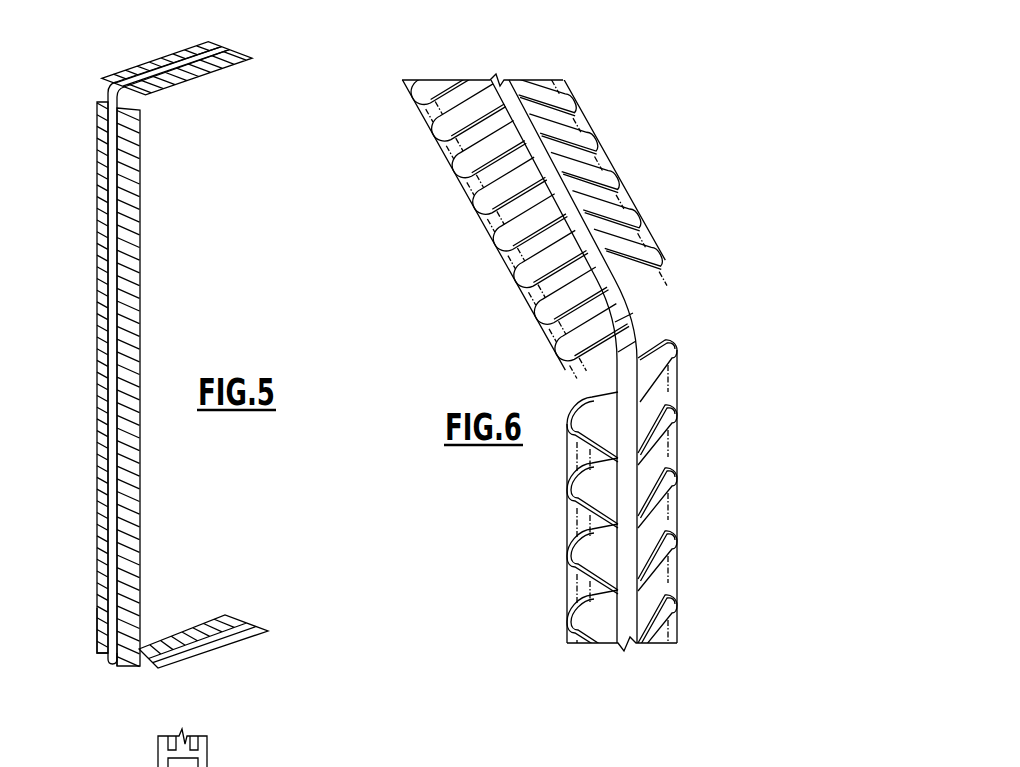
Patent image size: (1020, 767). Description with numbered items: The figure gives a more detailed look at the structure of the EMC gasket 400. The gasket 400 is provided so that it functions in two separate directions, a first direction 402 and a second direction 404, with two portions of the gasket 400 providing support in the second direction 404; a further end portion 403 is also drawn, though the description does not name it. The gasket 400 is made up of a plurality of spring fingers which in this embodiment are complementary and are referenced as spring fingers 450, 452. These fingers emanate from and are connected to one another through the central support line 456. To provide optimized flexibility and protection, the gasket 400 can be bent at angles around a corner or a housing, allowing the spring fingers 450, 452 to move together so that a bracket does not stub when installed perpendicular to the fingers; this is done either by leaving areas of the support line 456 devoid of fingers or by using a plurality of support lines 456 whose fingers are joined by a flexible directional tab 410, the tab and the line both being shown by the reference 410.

In FIG. 5, the gasket 400 is at (100, 365).
In FIG. 5, the first direction 402 is at (102, 188).
In FIG. 5, the lower fin plate 403 is at (186, 637).
In FIG. 5, the second direction 404 is at (183, 53).
In FIG. 5, the flexible directional tab 410 is at (107, 95).
In FIG. 6, the flexible directional tab 410 is at (628, 321).
In FIG. 5, the spring fingers 450 is at (138, 150).
In FIG. 5, the spring fingers 452 is at (98, 649).
In FIG. 5, the central support line 456 is at (109, 655).